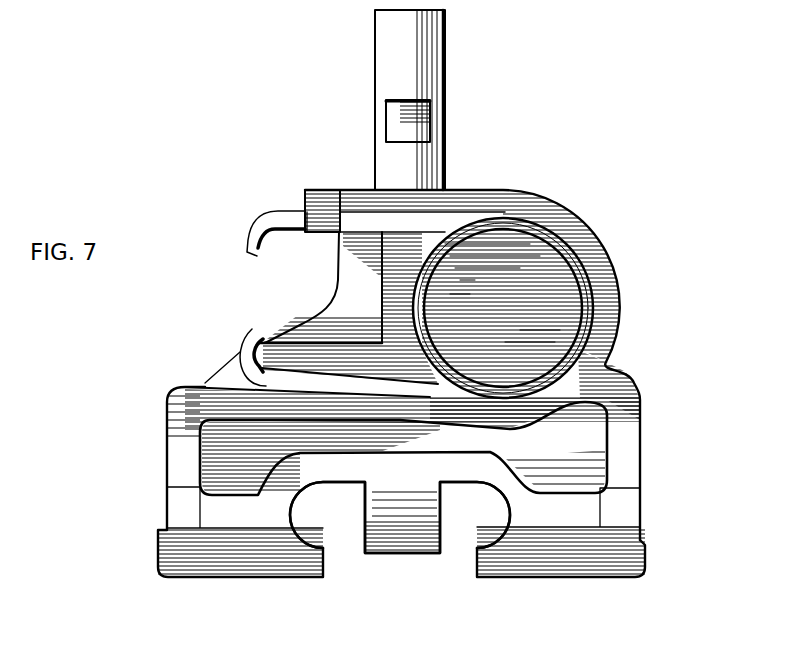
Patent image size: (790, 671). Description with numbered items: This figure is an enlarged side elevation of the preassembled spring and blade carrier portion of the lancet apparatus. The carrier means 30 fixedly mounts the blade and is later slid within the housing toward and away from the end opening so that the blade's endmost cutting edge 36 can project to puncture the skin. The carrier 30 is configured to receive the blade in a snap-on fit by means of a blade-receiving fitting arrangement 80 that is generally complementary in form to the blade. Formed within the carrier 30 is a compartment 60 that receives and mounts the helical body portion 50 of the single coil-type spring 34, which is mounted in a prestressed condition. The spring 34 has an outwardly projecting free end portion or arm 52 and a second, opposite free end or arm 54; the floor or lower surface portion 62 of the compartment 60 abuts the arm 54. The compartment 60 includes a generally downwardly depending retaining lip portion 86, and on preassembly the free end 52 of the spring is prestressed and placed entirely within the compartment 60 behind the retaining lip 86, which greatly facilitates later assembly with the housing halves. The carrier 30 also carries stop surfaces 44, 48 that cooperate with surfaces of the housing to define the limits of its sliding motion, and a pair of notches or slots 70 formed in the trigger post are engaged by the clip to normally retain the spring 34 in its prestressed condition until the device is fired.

The carrier means 30 is at (580, 212).
The coil-type spring 34 is at (585, 276).
The endmost cutting edge 36 is at (436, 76).
The stop surface 44 is at (330, 190).
The stop surface 48 is at (178, 508).
The helical body portion 50 is at (421, 312).
The free end portion or arm 52 is at (252, 234).
The free end or arm 54 is at (250, 330).
The compartment 60 is at (491, 388).
The floor or lower surface portion 62 is at (205, 383).
The notches or slots 70 is at (416, 114).
The blade-receiving fitting arrangement 80 is at (392, 562).
The retaining lip portion 86 is at (316, 232).